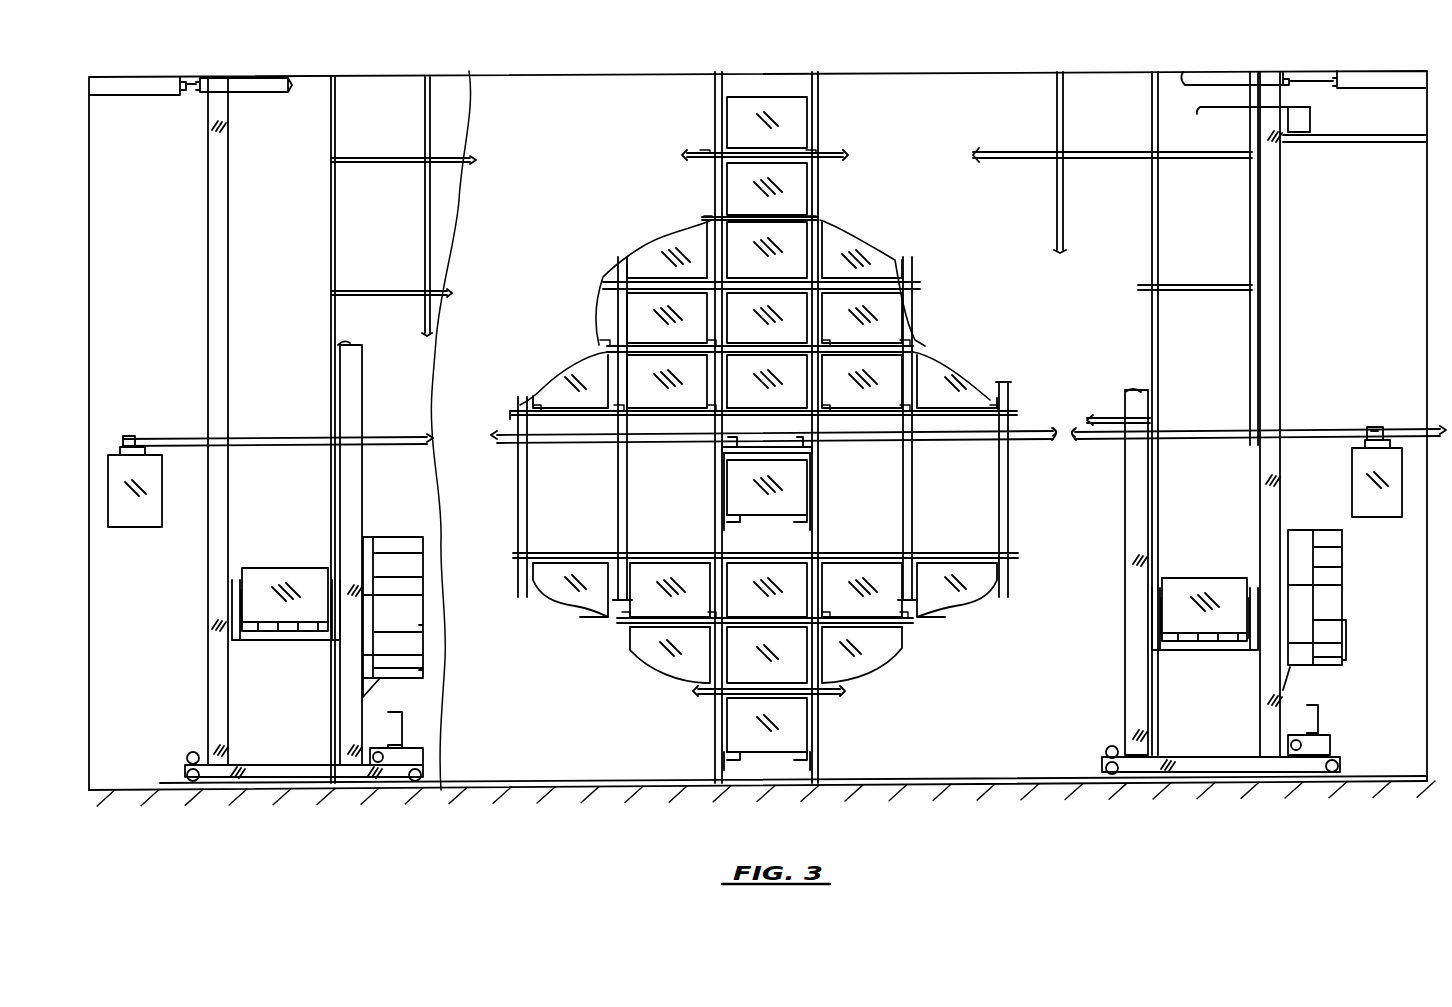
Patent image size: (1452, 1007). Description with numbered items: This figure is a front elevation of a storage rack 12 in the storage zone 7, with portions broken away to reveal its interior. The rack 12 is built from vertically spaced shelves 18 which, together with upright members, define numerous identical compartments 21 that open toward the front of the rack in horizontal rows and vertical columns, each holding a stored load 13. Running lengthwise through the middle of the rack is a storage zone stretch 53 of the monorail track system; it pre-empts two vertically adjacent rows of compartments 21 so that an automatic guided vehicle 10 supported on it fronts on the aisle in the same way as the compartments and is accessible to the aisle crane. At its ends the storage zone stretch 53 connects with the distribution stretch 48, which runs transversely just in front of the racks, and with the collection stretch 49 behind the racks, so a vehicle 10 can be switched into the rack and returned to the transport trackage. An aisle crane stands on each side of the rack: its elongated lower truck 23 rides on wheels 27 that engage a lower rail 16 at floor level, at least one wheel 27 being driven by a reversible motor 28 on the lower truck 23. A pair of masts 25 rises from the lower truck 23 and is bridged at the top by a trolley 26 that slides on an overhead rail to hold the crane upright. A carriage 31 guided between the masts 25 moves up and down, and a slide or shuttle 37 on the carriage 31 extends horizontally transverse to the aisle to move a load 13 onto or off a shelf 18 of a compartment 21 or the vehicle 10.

The storage zone 7 is at (1108, 72).
The automatic guided vehicle 10 is at (128, 527).
The storage rack 12 is at (848, 120).
The glass sheet 13 is at (720, 105).
The lower rail 16 is at (550, 768).
The shelf 18 is at (725, 148).
The compartment 21 is at (800, 86).
The lower truck 23 is at (420, 752).
The mast 25 is at (340, 481).
The trolley 26 is at (250, 94).
The wheel 27 is at (185, 770).
The reversible motor 28 is at (190, 752).
The carriage 31 is at (309, 640).
The slide or shuttle 37 is at (270, 632).
The distribution stretch 48 is at (122, 440).
The collection stretch 49 is at (1384, 432).
The storage zone stretch 53 is at (1053, 440).